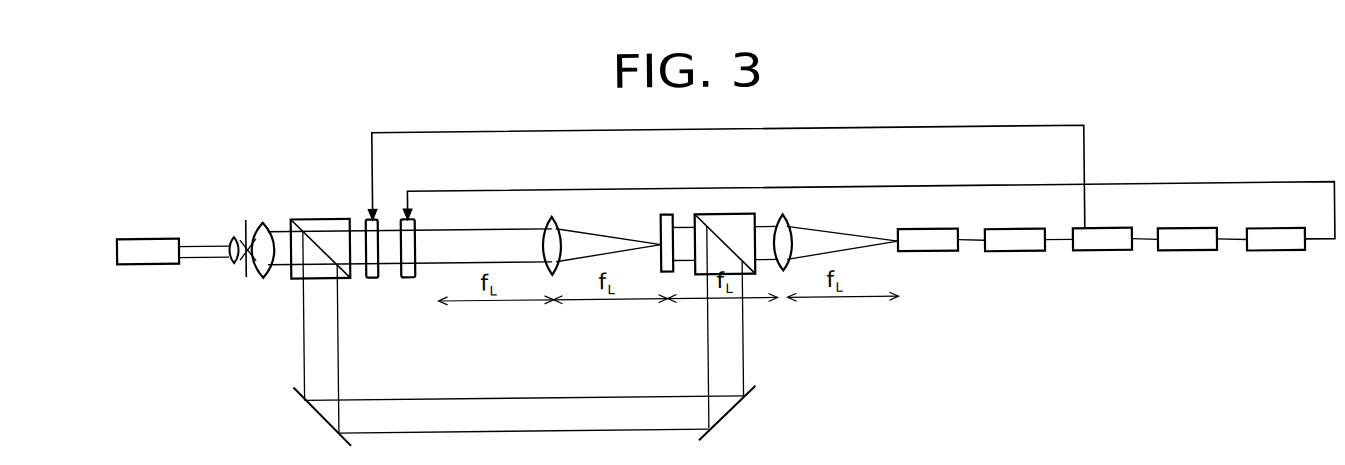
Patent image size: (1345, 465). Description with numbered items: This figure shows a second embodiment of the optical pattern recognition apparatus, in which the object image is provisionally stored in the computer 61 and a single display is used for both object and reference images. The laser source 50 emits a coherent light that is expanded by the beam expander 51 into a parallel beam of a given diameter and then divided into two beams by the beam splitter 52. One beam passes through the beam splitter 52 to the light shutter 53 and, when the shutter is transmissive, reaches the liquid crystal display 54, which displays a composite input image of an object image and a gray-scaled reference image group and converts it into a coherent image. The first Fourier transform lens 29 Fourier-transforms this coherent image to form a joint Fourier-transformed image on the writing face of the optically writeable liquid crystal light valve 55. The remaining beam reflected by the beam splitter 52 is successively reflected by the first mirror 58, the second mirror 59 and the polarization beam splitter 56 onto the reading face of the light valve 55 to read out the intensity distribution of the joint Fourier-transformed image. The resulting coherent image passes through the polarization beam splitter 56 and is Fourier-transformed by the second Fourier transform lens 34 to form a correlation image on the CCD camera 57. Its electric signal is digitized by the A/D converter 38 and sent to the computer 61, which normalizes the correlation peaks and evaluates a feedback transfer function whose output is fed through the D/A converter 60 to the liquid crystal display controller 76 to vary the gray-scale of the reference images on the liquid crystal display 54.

The laser source 50 is at (143, 238).
The beam expander 51 is at (246, 221).
The beam splitter 52 is at (317, 223).
The light shutter 53 is at (367, 222).
The liquid crystal display 54 is at (402, 222).
The first Fourier transform lens 29 is at (552, 228).
The optically writeable liquid crystal light valve 55 is at (667, 222).
The polarization beam splitter 56 is at (728, 223).
The second Fourier transform lens 34 is at (788, 220).
The CCD camera 57 is at (922, 237).
The A/D converter 38 is at (1018, 238).
The computer 61 is at (1105, 238).
The D/A converter 60 is at (1193, 239).
The liquid crystal display controller 76 is at (1275, 240).
The first mirror 58 is at (325, 423).
The second mirror 59 is at (726, 418).